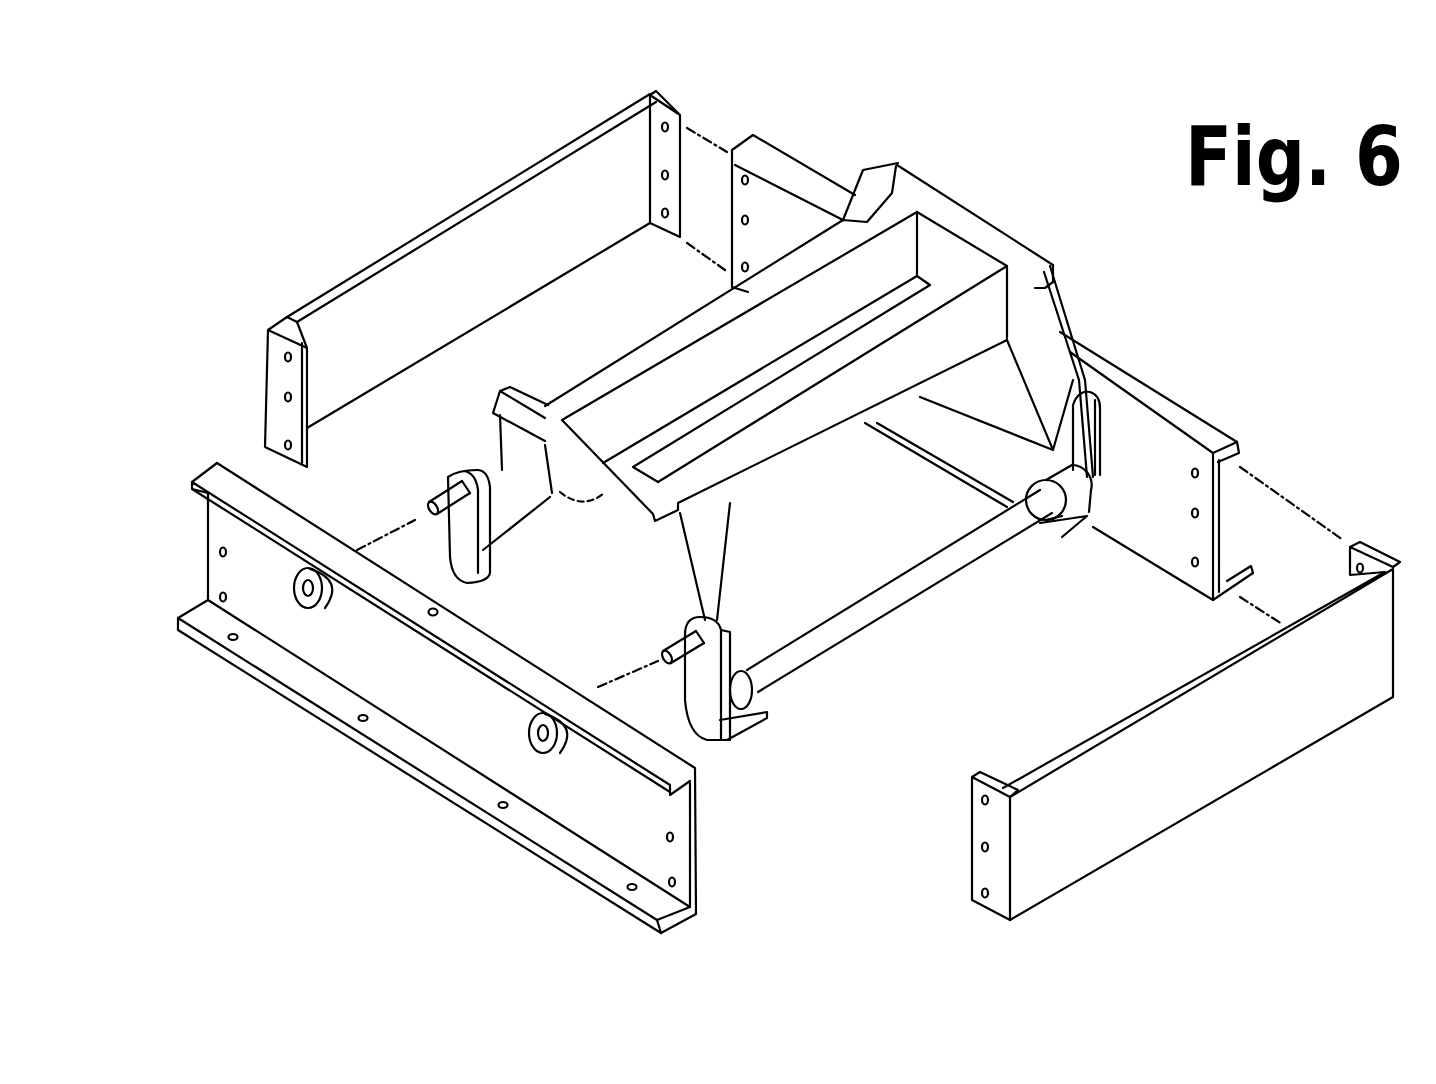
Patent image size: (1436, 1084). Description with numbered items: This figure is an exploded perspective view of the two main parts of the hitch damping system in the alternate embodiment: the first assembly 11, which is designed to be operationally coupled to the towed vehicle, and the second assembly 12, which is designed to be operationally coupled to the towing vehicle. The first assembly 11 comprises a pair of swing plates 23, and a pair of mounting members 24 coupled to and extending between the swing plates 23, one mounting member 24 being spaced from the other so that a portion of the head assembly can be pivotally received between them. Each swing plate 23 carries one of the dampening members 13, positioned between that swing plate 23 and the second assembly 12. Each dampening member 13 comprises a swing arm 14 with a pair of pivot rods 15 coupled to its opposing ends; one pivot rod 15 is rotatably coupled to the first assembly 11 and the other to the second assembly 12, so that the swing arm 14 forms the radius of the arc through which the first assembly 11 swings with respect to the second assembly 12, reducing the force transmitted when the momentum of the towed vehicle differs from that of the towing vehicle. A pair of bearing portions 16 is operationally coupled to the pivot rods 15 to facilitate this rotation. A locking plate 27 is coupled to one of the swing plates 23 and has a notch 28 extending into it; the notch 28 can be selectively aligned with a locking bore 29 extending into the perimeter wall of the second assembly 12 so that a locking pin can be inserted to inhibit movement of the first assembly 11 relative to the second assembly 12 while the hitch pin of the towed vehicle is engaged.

The first assembly 11 is at (1092, 311).
The second assembly 12 is at (243, 400).
The dampening member 13 is at (462, 470).
The swing arm 14 is at (463, 537).
The pivot rod 15 is at (437, 493).
The bearing portion 16 is at (310, 597).
The swing plate 23 is at (497, 457).
The mounting member 24 is at (865, 222).
The locking plate 27 is at (545, 400).
The notch 28 is at (552, 494).
The locking bore 29 is at (432, 618).